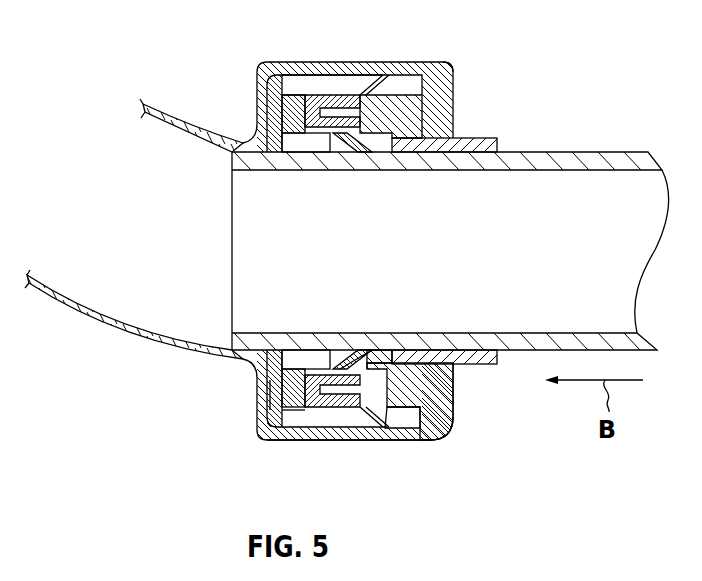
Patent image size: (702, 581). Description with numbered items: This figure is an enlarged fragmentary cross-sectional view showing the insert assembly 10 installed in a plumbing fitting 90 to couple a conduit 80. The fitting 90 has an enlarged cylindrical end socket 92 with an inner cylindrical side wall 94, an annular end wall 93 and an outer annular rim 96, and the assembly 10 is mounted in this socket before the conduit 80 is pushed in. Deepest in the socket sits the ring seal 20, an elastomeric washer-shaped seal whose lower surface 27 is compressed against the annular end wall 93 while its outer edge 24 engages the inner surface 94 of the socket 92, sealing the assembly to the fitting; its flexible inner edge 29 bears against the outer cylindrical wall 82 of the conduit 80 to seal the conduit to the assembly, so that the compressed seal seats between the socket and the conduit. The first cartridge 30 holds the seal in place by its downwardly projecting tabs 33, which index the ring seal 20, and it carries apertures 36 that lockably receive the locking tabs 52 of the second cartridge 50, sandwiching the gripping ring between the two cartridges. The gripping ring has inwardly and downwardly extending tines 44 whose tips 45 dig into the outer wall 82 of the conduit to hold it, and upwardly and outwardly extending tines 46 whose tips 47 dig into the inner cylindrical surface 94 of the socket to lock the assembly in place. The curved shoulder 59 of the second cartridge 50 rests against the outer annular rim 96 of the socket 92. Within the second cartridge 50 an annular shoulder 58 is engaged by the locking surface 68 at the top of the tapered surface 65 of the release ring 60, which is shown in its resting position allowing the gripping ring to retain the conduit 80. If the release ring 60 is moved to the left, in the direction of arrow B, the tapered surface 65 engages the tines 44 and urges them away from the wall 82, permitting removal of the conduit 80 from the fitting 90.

The insert assembly 10 is at (482, 93).
The ring seal 20 is at (296, 80).
The outer edge 24 is at (278, 430).
The lower surface 27 is at (276, 385).
The flexible edge 29 is at (273, 352).
The first cartridge 30 is at (304, 150).
The tabs 33 is at (273, 396).
The apertures 36 is at (308, 98).
The tines 44 is at (340, 356).
The tips 45 is at (333, 352).
The tines 46 is at (392, 77).
The tips 47 is at (397, 430).
The second cartridge 50 is at (457, 118).
The locking tabs 52 is at (305, 412).
The annular shoulder 58 is at (393, 140).
The curved shoulder 59 is at (452, 69).
The release ring 60 is at (478, 376).
The tapered surface 65 is at (355, 365).
The locking surface 68 is at (397, 371).
The conduit 80 is at (632, 130).
The outer cylindrical wall 82 is at (535, 152).
The plumbing fitting 90 is at (178, 98).
The end socket 92 is at (331, 88).
The annular end wall 93 is at (264, 124).
The inner cylindrical side wall 94 is at (362, 92).
The outer annular rim 96 is at (430, 435).